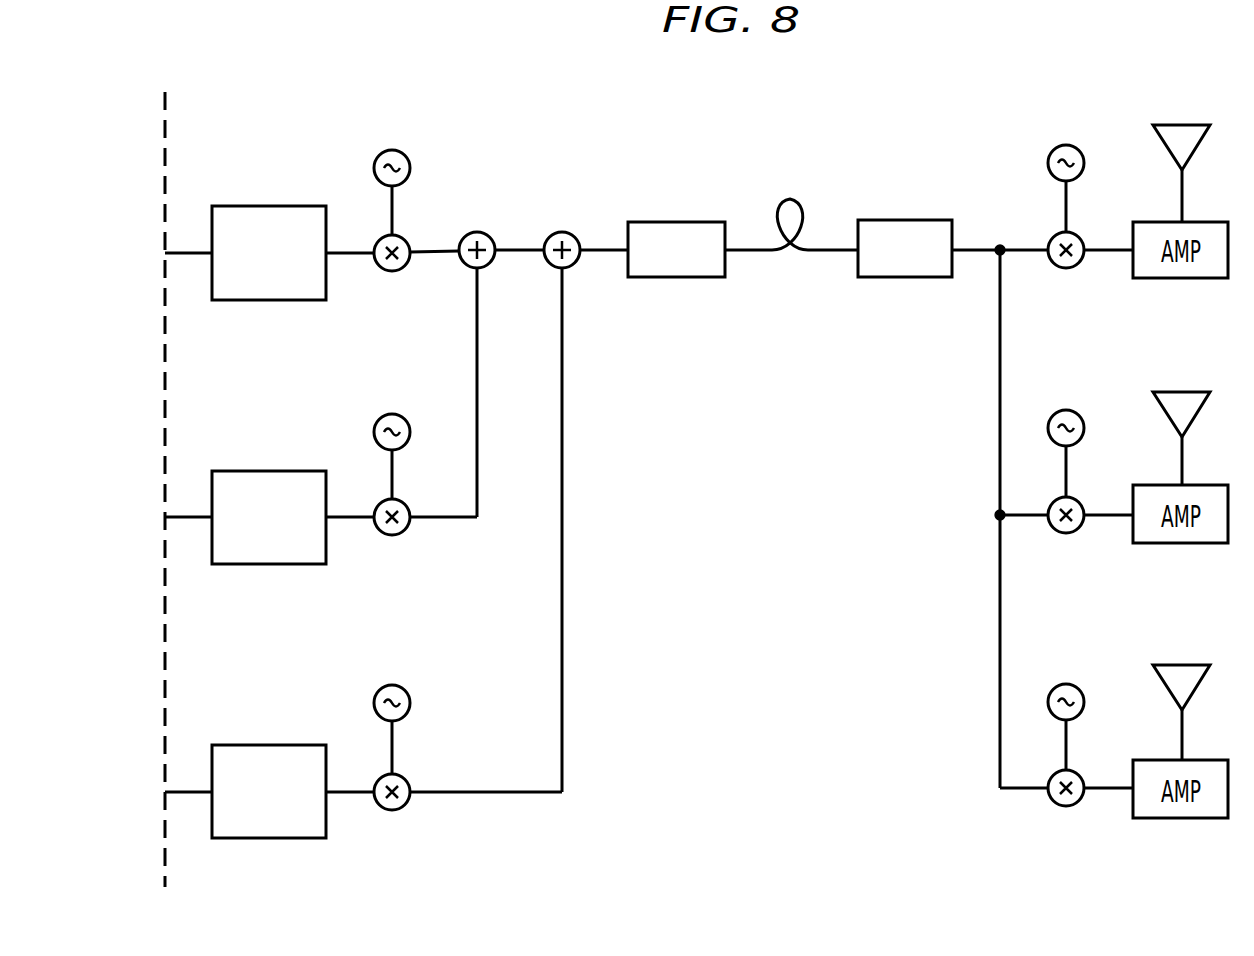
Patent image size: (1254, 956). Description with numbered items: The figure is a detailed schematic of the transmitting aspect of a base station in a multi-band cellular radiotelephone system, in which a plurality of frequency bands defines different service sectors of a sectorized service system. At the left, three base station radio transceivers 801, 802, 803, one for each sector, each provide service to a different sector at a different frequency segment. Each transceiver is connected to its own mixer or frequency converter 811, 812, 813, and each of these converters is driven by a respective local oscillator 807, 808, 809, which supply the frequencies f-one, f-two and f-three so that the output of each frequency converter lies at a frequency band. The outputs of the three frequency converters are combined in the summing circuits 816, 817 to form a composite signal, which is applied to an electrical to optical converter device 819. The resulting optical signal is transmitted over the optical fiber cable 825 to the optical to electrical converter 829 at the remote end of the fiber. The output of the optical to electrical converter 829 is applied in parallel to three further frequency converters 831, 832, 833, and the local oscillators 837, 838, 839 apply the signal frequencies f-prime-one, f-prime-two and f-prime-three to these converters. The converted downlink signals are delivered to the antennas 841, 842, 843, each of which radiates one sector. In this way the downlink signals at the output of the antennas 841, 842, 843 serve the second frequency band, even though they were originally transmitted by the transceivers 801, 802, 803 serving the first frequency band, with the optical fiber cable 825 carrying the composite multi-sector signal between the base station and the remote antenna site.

The base station radio transceiver 801 is at (254, 206).
The base station radio transceiver 802 is at (254, 471).
The base station radio transceiver 803 is at (254, 745).
The local oscillator 807 is at (388, 150).
The local oscillator 808 is at (388, 414).
The local oscillator 809 is at (388, 685).
The frequency converter 811 is at (392, 271).
The frequency converter 812 is at (392, 535).
The frequency converter 813 is at (392, 810).
The summing circuit 816 is at (477, 232).
The summing circuit 817 is at (562, 232).
The electrical to optical converter device 819 is at (654, 221).
The optical fiber cable 825 is at (790, 200).
The optical to electrical converter 829 is at (885, 220).
The frequency converter 831 is at (1066, 268).
The frequency converter 832 is at (1066, 533).
The frequency converter 833 is at (1066, 806).
The local oscillator 837 is at (1064, 145).
The local oscillator 838 is at (1064, 410).
The local oscillator 839 is at (1064, 684).
The antenna 841 is at (1180, 665).
The antenna 842 is at (1180, 392).
The antenna 843 is at (1180, 125).